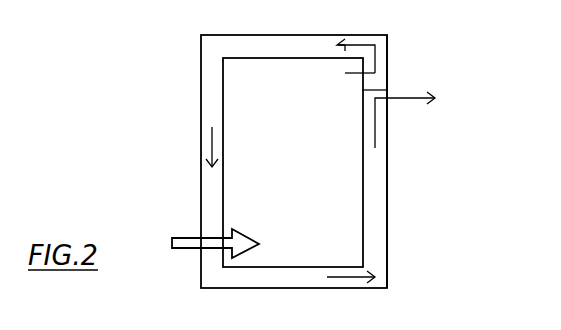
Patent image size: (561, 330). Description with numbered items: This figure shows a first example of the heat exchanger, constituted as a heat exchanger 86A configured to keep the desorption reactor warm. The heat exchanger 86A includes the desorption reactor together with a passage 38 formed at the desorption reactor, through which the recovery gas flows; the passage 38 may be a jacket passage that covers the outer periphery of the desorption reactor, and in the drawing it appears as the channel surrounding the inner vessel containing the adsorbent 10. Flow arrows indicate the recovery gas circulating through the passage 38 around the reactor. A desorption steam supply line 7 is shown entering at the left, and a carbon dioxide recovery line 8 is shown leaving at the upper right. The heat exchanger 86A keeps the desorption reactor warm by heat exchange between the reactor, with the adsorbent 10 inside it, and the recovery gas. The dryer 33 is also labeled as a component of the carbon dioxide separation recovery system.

The dryer 33 is at (187, 86).
The adsorbent 10 is at (306, 181).
The desorption steam supply line 7 is at (175, 237).
The carbon dioxide recovery line 8 is at (405, 102).
The heat exchanger 86A is at (397, 195).
The passage 38 is at (384, 224).